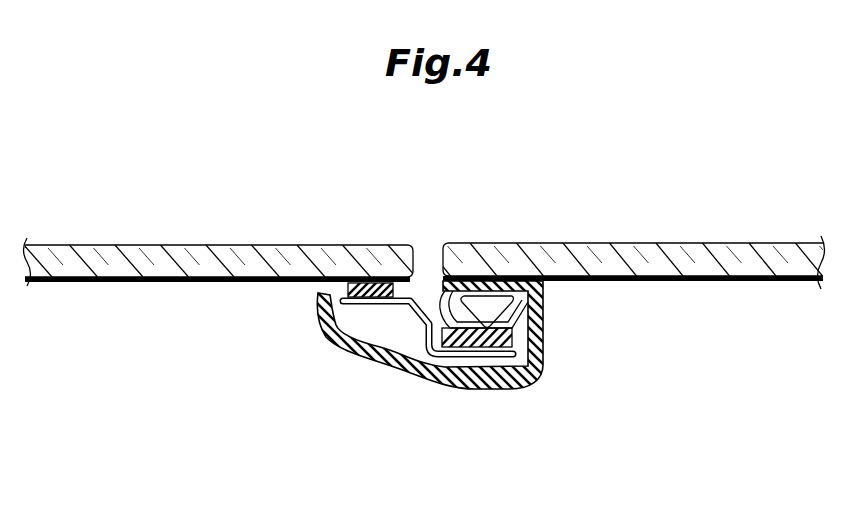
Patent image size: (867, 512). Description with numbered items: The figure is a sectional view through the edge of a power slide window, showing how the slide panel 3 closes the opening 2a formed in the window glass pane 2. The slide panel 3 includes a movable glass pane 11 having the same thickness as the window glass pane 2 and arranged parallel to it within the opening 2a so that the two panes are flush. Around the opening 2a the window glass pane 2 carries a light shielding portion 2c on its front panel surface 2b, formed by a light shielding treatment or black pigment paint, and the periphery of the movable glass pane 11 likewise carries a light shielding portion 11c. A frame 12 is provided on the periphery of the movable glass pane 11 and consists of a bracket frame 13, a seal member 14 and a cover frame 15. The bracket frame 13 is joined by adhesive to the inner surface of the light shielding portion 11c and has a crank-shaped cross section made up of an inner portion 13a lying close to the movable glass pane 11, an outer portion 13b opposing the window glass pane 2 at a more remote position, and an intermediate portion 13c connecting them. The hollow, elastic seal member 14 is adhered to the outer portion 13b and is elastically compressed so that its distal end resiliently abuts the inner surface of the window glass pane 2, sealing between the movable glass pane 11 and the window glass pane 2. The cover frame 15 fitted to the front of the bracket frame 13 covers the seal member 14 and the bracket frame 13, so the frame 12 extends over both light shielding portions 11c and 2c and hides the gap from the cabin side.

The window glass pane 2 is at (694, 236).
The opening 2a is at (435, 249).
The panel surface 2b is at (687, 281).
The light shielding portion 2c is at (560, 285).
The slide panel 3 is at (131, 238).
The movable glass pane 11 is at (270, 245).
The light shielding portion 11c is at (292, 284).
The frame 12 is at (452, 395).
The bracket frame 13 is at (398, 322).
The inner portion 13a is at (362, 302).
The outer portion 13b is at (482, 356).
The intermediate portion 13c is at (417, 332).
The seal member 14 is at (530, 290).
The cover frame 15 is at (504, 391).